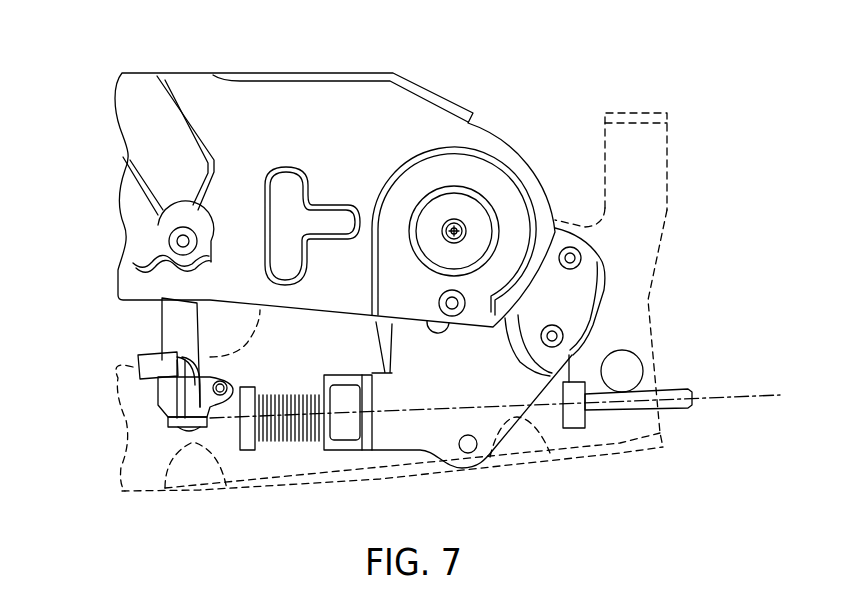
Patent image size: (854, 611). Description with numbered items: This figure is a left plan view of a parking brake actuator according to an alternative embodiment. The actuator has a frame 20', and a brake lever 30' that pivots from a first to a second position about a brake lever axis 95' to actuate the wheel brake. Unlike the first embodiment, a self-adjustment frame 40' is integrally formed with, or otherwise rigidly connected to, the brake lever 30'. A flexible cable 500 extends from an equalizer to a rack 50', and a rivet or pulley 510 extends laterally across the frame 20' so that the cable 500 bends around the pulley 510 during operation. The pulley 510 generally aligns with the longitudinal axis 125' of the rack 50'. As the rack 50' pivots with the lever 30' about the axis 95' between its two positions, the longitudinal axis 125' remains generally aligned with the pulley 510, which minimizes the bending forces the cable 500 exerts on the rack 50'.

The brake lever 30' is at (311, 223).
The brake lever axis 95' is at (495, 169).
The frame 20' is at (419, 302).
The self-adjustment frame 40' is at (625, 302).
The rivet or pulley 510 is at (642, 358).
The longitudinal axis 125' is at (683, 367).
The rack 50' is at (480, 430).
The flexible cable 500 is at (637, 410).